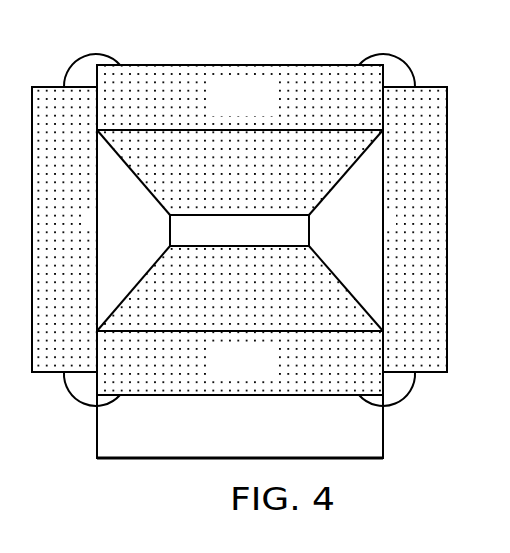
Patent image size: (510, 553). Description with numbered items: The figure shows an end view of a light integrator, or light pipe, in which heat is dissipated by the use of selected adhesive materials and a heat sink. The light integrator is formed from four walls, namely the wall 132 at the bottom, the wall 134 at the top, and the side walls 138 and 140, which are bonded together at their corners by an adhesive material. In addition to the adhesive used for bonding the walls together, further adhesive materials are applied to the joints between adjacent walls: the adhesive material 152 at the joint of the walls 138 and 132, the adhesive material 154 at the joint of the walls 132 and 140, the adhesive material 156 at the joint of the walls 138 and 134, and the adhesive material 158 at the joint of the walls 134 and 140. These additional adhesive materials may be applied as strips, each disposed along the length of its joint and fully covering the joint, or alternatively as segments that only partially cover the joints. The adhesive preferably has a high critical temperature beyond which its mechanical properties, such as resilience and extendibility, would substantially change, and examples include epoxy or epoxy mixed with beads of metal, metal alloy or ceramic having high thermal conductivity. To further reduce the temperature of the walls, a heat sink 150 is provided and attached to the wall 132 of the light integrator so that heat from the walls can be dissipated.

The wall 132 is at (262, 373).
The wall 134 is at (262, 110).
The wall 138 is at (391, 221).
The wall 140 is at (88, 221).
The heat sink 150 is at (140, 458).
The adhesive material 152 is at (397, 405).
The adhesive material 154 is at (82, 405).
The adhesive material 156 is at (396, 55).
The adhesive material 158 is at (83, 55).